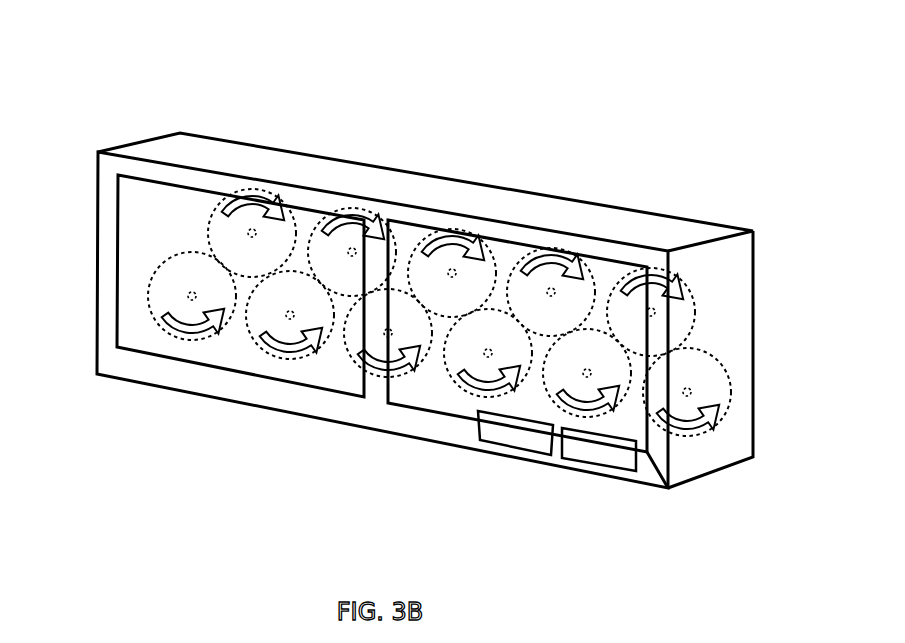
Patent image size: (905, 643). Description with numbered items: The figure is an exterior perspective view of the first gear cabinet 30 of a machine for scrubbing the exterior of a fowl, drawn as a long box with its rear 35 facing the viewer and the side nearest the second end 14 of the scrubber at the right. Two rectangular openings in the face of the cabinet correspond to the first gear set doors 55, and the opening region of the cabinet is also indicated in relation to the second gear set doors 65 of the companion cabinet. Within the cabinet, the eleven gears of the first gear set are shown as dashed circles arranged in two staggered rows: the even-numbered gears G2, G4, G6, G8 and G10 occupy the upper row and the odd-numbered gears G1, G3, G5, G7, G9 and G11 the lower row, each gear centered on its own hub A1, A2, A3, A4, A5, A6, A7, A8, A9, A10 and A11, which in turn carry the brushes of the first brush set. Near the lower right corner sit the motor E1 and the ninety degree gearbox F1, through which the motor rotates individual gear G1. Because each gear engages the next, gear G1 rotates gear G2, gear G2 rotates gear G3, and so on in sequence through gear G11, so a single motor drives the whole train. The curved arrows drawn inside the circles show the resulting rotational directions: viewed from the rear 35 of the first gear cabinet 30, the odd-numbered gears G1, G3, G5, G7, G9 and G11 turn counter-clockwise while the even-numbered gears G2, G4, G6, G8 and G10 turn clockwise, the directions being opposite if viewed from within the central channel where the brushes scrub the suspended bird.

The first gear cabinet 30 is at (716, 104).
The second end 14 is at (657, 468).
The rear 35 is at (647, 473).
The first gear set doors 55 is at (333, 378).
The second gear set doors 65 is at (235, 263).
The motor E1 is at (515, 433).
The ninety degree gearbox F1 is at (599, 449).
The individual gear G1 is at (650, 377).
The individual gear G2 is at (675, 340).
The individual gear G3 is at (560, 351).
The individual gear G4 is at (572, 308).
The individual gear G5 is at (507, 360).
The individual gear G6 is at (472, 288).
The individual gear G7 is at (353, 318).
The individual gear G8 is at (388, 266).
The individual gear G9 is at (255, 290).
The individual gear G10 is at (282, 246).
The individual gear G11 is at (165, 287).
The hub A1 is at (686, 393).
The hub A2 is at (650, 312).
The hub A3 is at (586, 374).
The hub A4 is at (549, 293).
The hub A5 is at (487, 354).
The hub A6 is at (450, 274).
The hub A7 is at (387, 334).
The hub A8 is at (350, 252).
The hub A9 is at (289, 316).
The hub A10 is at (248, 231).
The hub A11 is at (191, 297).